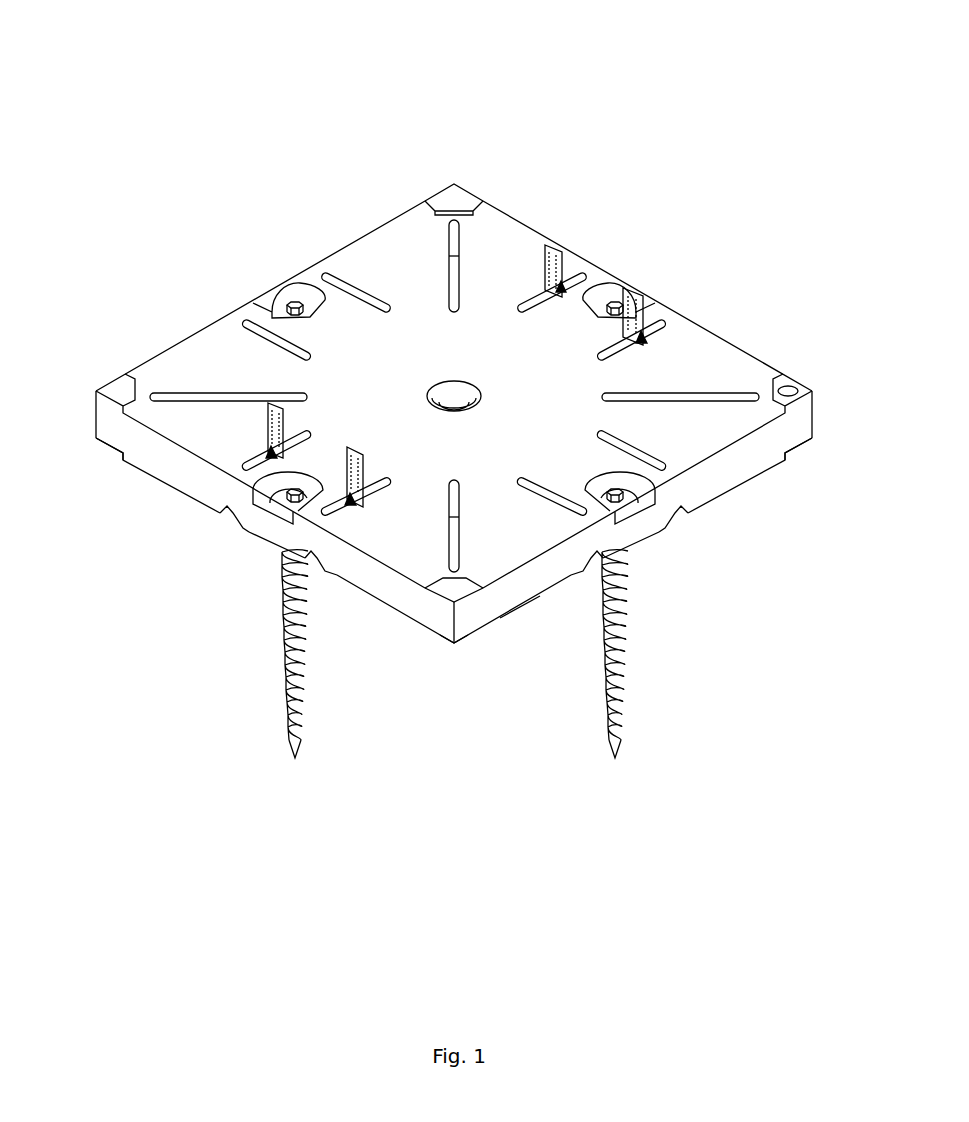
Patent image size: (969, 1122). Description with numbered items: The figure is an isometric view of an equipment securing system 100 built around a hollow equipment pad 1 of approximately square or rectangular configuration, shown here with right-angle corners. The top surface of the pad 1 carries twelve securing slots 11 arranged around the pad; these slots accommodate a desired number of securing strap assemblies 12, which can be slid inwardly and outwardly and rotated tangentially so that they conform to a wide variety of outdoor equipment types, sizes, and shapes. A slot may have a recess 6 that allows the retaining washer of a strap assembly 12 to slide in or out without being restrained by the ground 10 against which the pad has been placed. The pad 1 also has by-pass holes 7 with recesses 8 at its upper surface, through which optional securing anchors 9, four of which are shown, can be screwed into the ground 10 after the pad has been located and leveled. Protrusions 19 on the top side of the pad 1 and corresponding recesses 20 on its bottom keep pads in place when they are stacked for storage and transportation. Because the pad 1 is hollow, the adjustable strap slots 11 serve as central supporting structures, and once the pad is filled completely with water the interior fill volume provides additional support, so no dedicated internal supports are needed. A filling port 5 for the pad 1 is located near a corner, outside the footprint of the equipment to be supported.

The hollow equipment pad 1 is at (753, 448).
The filling port 5 is at (790, 390).
The recess 6 is at (672, 515).
The by-pass hole 7 is at (445, 405).
The recess 8 is at (295, 283).
The securing anchor 9 is at (281, 302).
The ground 10 is at (528, 620).
The securing slot 11 is at (447, 248).
The securing strap assembly 12 is at (267, 417).
The protrusion 19 is at (452, 197).
The recess 20 is at (807, 440).
The equipment securing system 100 is at (743, 103).